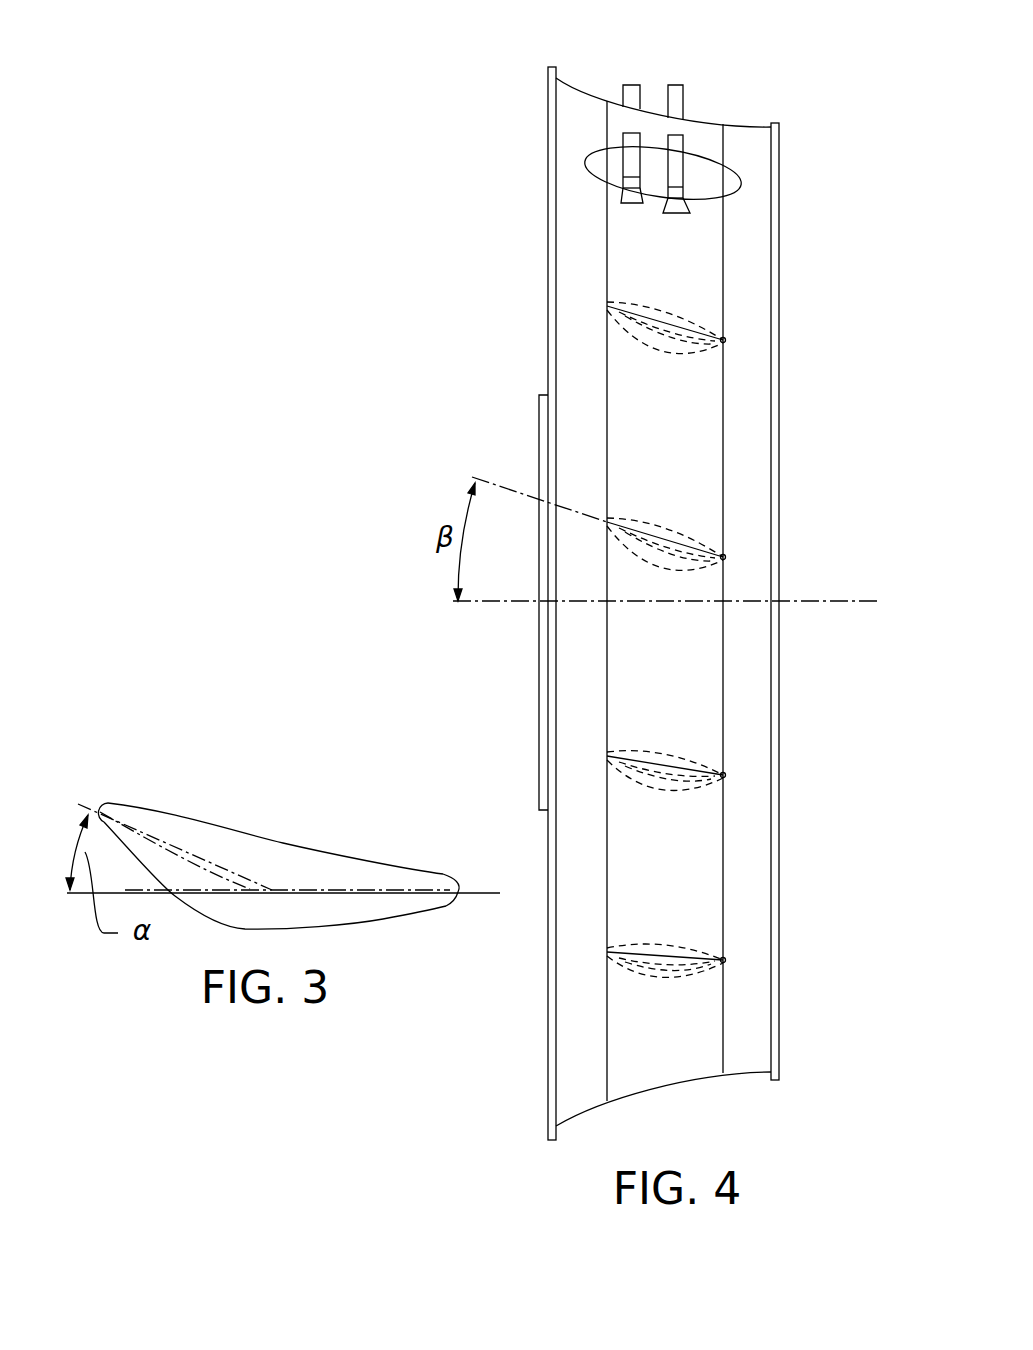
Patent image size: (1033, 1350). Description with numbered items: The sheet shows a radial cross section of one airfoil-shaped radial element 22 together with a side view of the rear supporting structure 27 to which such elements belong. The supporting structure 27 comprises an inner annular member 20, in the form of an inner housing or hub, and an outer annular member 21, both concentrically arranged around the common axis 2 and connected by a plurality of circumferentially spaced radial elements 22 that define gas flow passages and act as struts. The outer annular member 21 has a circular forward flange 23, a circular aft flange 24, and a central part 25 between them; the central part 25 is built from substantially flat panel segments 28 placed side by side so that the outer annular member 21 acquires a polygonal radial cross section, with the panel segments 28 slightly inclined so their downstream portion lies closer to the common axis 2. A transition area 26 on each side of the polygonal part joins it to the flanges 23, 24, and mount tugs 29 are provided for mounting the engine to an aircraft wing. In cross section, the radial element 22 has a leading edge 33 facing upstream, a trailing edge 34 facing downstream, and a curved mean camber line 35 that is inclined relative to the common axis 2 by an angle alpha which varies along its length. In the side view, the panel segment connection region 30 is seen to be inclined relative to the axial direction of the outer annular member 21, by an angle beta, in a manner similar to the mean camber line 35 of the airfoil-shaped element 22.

In FIG. 4, the common axis 2 is at (805, 601).
In FIG. 3, the common axis 2 is at (468, 893).
In FIG. 4, the inner annular member 20 is at (543, 427).
In FIG. 4, the outer annular member 21 is at (748, 1043).
In FIG. 4, the radial element 22 is at (692, 562).
In FIG. 3, the radial element 22 is at (236, 775).
In FIG. 4, the forward flange 23 is at (548, 127).
In FIG. 4, the aft flange 24 is at (777, 178).
In FIG. 4, the central part 25 is at (648, 127).
In FIG. 4, the transition area 26 is at (573, 110).
In FIG. 4, the rear supporting structure 27 is at (388, 189).
In FIG. 4, the panel segment 28 is at (675, 417).
In FIG. 4, the mount tug 29 is at (678, 143).
In FIG. 4, the panel segment connection region 30 is at (663, 533).
In FIG. 3, the leading edge 33 is at (108, 803).
In FIG. 3, the trailing edge 34 is at (457, 877).
In FIG. 3, the mean camber line 35 is at (270, 883).